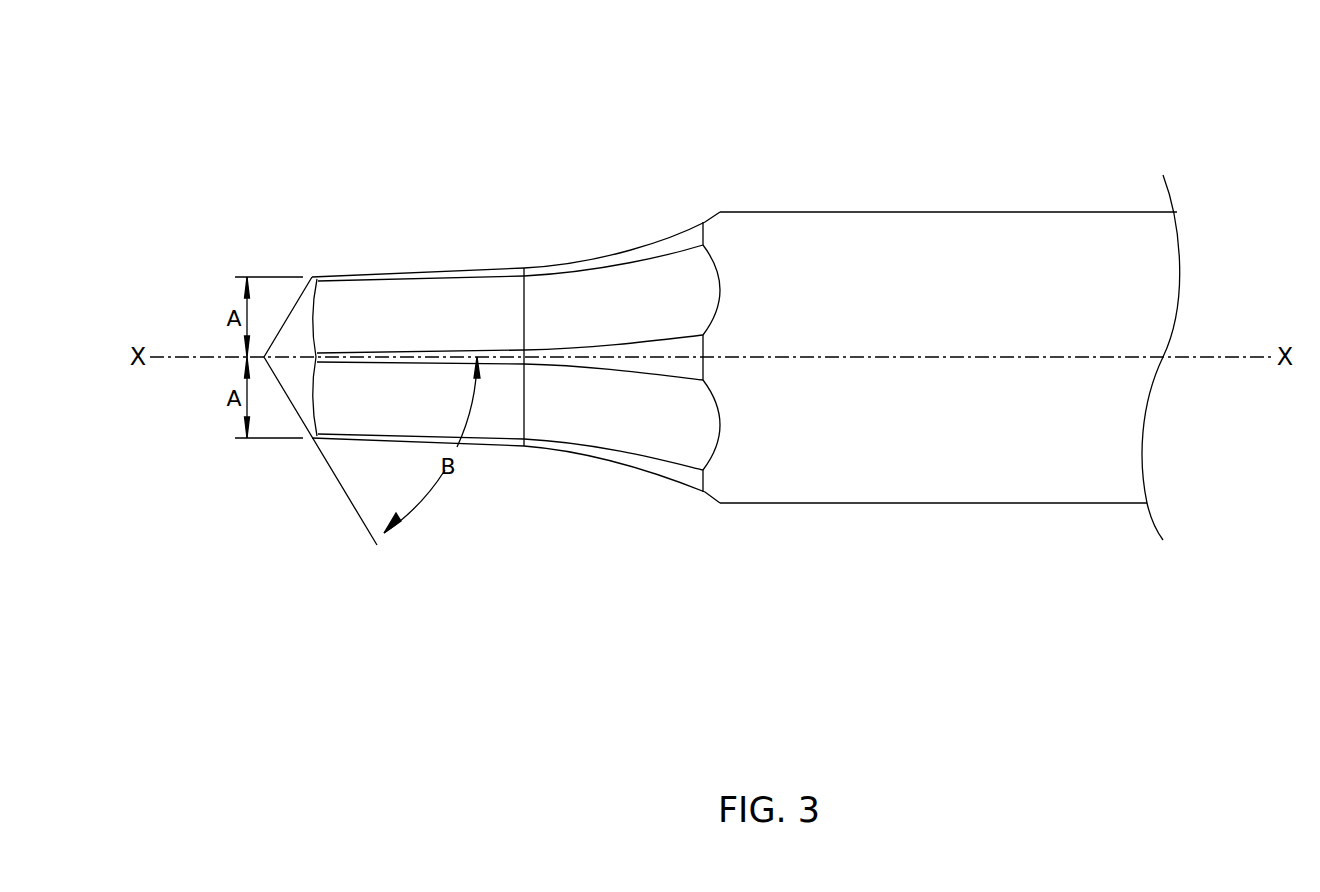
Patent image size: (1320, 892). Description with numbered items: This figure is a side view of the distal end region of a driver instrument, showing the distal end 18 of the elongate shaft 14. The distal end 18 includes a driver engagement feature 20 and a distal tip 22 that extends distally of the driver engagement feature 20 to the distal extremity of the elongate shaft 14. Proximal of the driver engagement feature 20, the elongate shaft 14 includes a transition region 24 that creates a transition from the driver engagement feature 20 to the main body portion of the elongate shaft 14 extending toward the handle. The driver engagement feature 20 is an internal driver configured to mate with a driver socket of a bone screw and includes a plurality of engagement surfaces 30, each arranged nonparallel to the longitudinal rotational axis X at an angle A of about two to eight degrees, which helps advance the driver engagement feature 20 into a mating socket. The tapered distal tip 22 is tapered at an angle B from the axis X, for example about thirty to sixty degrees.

The elongate shaft 14 is at (950, 211).
The distal end 18 is at (550, 112).
The driver engagement feature 20 is at (523, 267).
The distal tip 22 is at (302, 308).
The transition region 24 is at (524, 207).
The engagement surfaces 30 is at (353, 298).